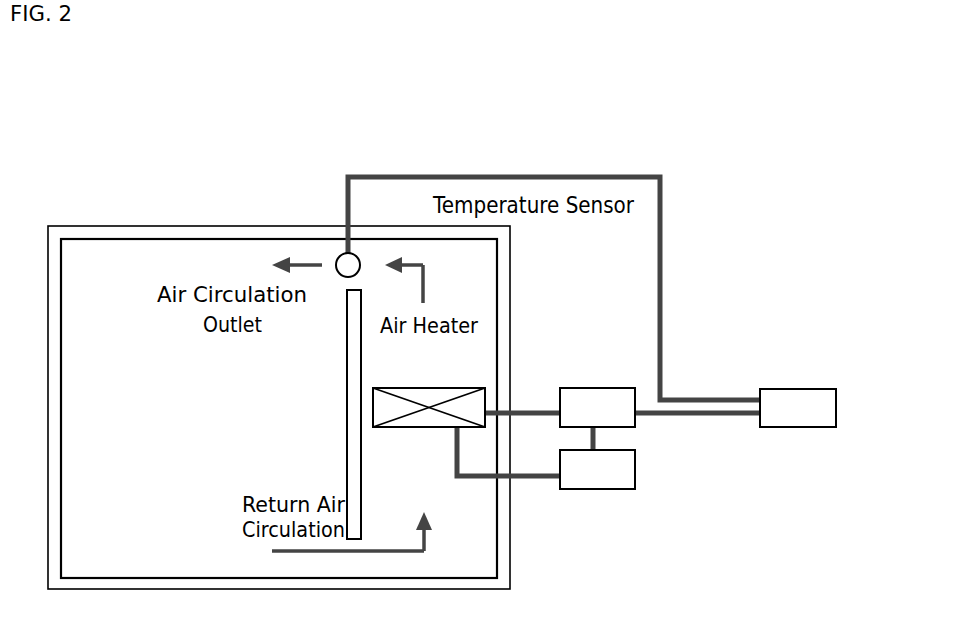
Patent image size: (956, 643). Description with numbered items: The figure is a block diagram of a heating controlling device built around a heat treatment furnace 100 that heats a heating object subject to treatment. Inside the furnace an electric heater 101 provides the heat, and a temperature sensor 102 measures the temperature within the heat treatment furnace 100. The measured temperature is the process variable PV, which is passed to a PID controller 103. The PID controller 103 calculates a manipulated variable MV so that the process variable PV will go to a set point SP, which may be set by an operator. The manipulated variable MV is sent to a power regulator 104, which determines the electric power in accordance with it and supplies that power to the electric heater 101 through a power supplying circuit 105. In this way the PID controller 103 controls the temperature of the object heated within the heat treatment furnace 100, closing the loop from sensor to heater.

The heat treatment furnace 100 is at (112, 227).
The electric heater 101 is at (395, 388).
The temperature sensor 102 is at (360, 257).
The PID controller 103 is at (772, 428).
The power regulator 104 is at (568, 387).
The power supplying circuit 105 is at (568, 490).